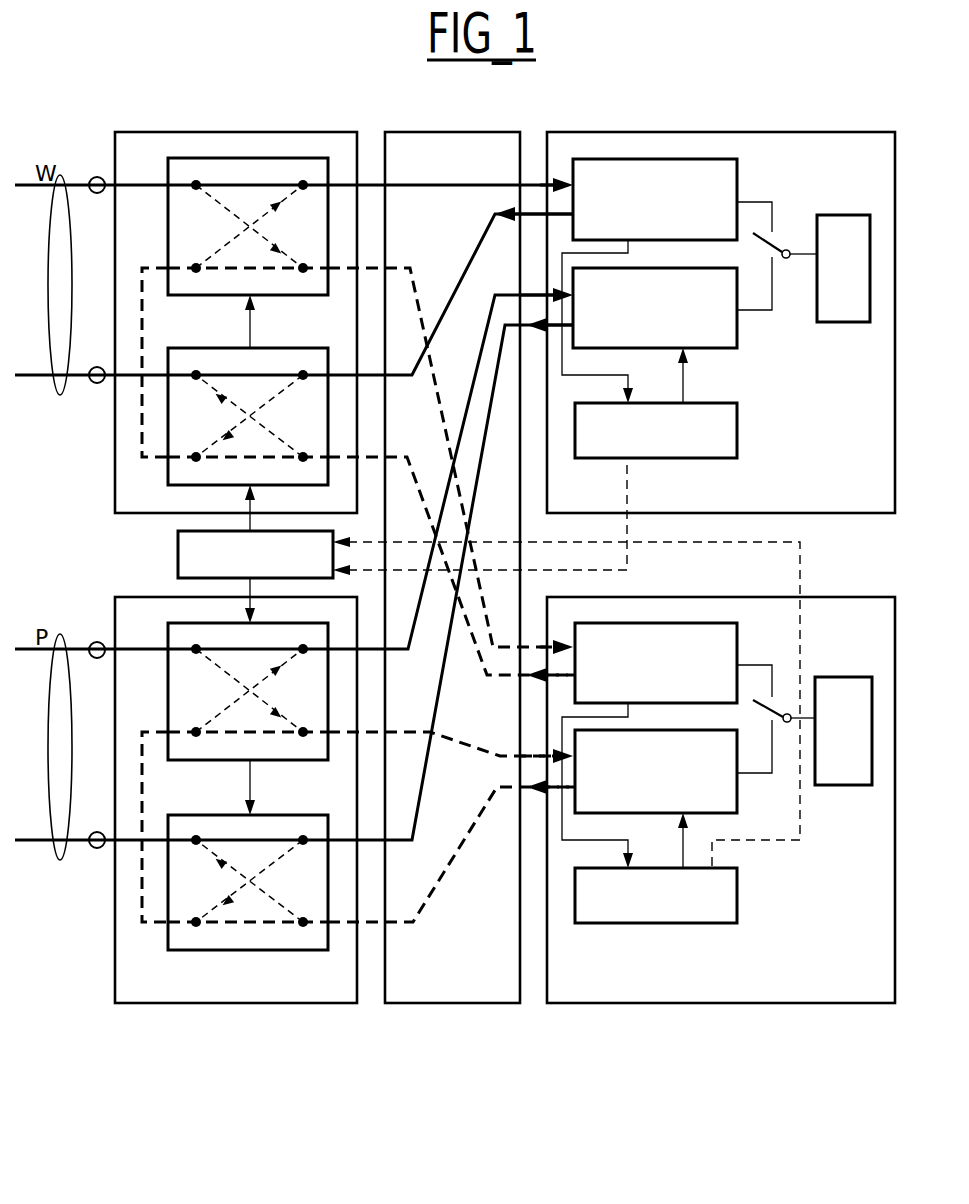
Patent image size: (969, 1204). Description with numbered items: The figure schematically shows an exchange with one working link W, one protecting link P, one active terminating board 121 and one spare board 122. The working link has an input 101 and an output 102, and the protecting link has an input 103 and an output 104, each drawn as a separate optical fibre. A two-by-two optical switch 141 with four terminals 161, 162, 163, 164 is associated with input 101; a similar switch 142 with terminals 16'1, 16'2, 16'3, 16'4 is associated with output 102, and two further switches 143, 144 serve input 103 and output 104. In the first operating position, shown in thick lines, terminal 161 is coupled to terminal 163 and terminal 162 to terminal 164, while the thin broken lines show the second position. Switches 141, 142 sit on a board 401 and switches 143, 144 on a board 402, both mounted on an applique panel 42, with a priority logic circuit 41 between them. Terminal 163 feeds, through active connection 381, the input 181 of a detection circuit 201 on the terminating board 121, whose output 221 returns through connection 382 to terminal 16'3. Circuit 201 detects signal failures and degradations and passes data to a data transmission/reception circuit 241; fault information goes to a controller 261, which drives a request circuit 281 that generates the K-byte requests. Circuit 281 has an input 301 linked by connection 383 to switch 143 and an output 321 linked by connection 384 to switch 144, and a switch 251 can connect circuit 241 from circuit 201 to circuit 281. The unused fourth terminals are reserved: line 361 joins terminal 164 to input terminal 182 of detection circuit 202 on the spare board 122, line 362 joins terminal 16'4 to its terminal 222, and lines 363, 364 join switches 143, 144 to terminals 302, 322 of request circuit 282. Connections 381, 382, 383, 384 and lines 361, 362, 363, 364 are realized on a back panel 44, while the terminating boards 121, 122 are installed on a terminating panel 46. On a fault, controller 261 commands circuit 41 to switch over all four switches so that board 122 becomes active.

The input 101 is at (77, 180).
The output 102 is at (75, 395).
The input 103 is at (75, 640).
The output 104 is at (72, 860).
The 2x2 optical switch 141 is at (276, 158).
The 2x2 optical switch 142 is at (230, 487).
The 2x2 optical switch 143 is at (210, 622).
The 2x2 optical switch 144 is at (260, 940).
The terminal 161 is at (194, 184).
The terminal 162 is at (198, 272).
The terminal 163 is at (306, 183).
The terminal 164 is at (303, 272).
The terminal 16'1 is at (190, 345).
The terminal 16'2 is at (168, 484).
The terminal 16'3 is at (295, 345).
The terminal 16'4 is at (320, 484).
The board 401 is at (157, 247).
The board 402 is at (174, 993).
The priority logic circuit 41 is at (178, 556).
The applique panel 42 is at (236, 590).
The back panel 44 is at (452, 590).
The terminating panel 46 is at (721, 590).
The terminating board 121 is at (858, 497).
The spare board 122 is at (843, 928).
The input 181 is at (572, 183).
The input terminal 182 is at (578, 640).
The detection circuit 201 is at (738, 172).
The detection circuit 202 is at (738, 642).
The output 221 is at (545, 212).
The input terminal 222 is at (537, 678).
The data transmission/reception circuit 241 is at (843, 322).
The switch 251 is at (786, 260).
The controller 261 is at (737, 433).
The request circuit 281 is at (730, 348).
The request circuit 282 is at (737, 795).
The input 301 is at (568, 293).
The terminal 302 is at (562, 755).
The output 321 is at (562, 330).
The input terminal 322 is at (572, 793).
The line 361 is at (435, 382).
The line 362 is at (417, 484).
The line 363 is at (457, 745).
The line 364 is at (447, 868).
The active connection 381 is at (452, 184).
The active connection 382 is at (460, 283).
The active connection 383 is at (413, 655).
The active connection 384 is at (417, 813).